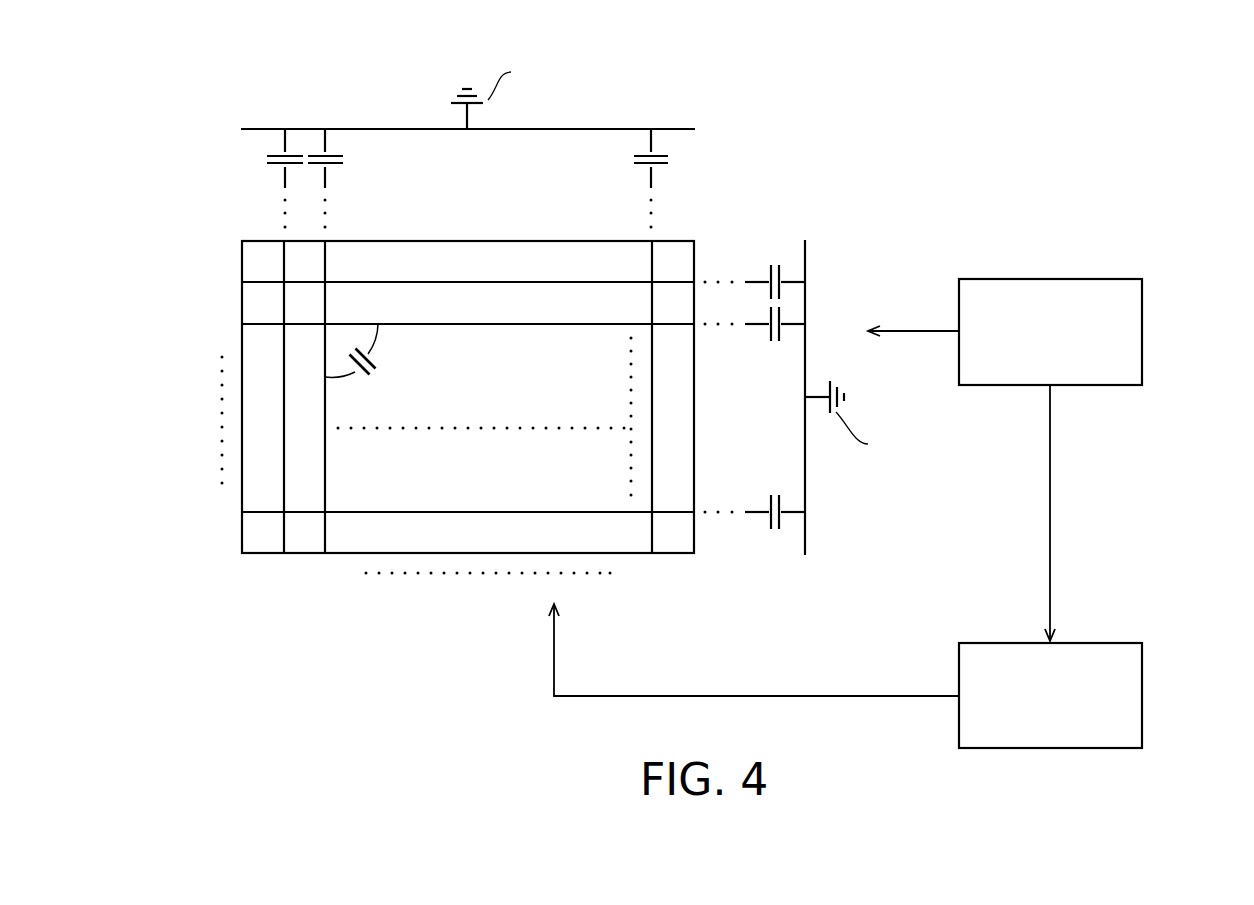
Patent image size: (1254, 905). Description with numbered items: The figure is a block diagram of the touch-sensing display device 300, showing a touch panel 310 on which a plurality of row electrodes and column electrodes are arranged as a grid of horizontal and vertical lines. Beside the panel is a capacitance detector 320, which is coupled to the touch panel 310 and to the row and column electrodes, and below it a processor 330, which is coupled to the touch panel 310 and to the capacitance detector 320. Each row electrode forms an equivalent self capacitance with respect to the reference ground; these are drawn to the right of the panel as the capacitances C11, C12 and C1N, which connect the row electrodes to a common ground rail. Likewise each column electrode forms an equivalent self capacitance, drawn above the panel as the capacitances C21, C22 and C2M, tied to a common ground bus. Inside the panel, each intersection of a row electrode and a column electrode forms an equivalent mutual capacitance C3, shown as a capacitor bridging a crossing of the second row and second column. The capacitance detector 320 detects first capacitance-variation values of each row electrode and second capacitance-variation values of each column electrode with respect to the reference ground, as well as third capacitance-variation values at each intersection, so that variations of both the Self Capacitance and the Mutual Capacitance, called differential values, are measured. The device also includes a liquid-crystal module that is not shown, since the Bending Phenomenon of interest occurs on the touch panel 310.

The touch-sensing display device 300 is at (222, 87).
The touch panel 310 is at (675, 240).
The capacitance detector 320 is at (1143, 330).
The processor 330 is at (1143, 695).
The mutual capacitance C3 is at (372, 376).
The column electrode self capacitance C21 is at (265, 158).
The column electrode self capacitance C22 is at (345, 158).
The column electrode self capacitance C2M is at (632, 158).
The row electrode self capacitance C11 is at (773, 263).
The row electrode self capacitance C12 is at (776, 343).
The row electrode self capacitance C1N is at (775, 531).